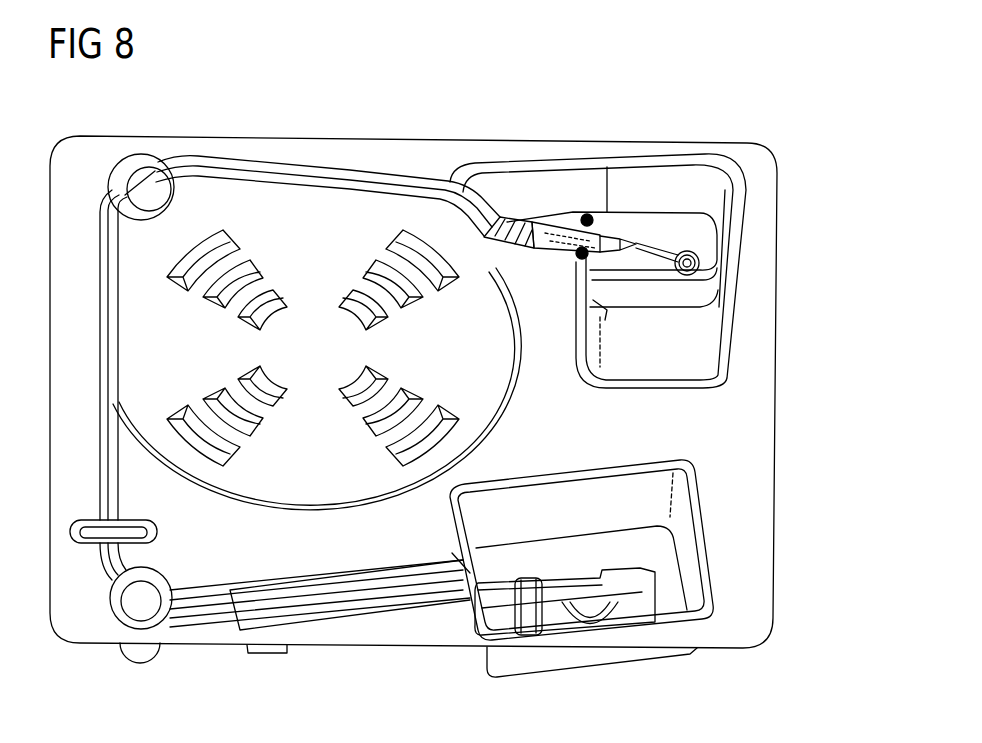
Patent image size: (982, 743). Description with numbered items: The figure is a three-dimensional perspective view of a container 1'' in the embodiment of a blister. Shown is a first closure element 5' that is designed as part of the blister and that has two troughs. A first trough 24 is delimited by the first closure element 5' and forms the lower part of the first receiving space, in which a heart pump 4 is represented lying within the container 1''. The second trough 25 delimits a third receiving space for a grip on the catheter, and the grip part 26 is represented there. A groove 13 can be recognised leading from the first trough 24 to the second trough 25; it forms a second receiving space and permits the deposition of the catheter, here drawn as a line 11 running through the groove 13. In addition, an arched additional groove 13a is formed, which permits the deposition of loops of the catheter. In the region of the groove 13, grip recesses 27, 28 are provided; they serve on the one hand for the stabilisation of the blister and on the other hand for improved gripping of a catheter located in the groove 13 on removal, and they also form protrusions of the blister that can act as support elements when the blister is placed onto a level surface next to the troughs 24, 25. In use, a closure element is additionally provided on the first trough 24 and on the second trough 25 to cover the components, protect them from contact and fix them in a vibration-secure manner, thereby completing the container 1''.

The container 1'' is at (467, 399).
The heart pump 4 is at (642, 240).
The first closure element 5' is at (679, 328).
The line 11 is at (385, 172).
The groove 13 is at (337, 172).
The additional groove 13a is at (512, 407).
The first trough 24 is at (680, 230).
The second trough 25 is at (690, 548).
The grip part 26 is at (557, 630).
The grip recess 27 is at (110, 605).
The grip recess 28 is at (135, 178).